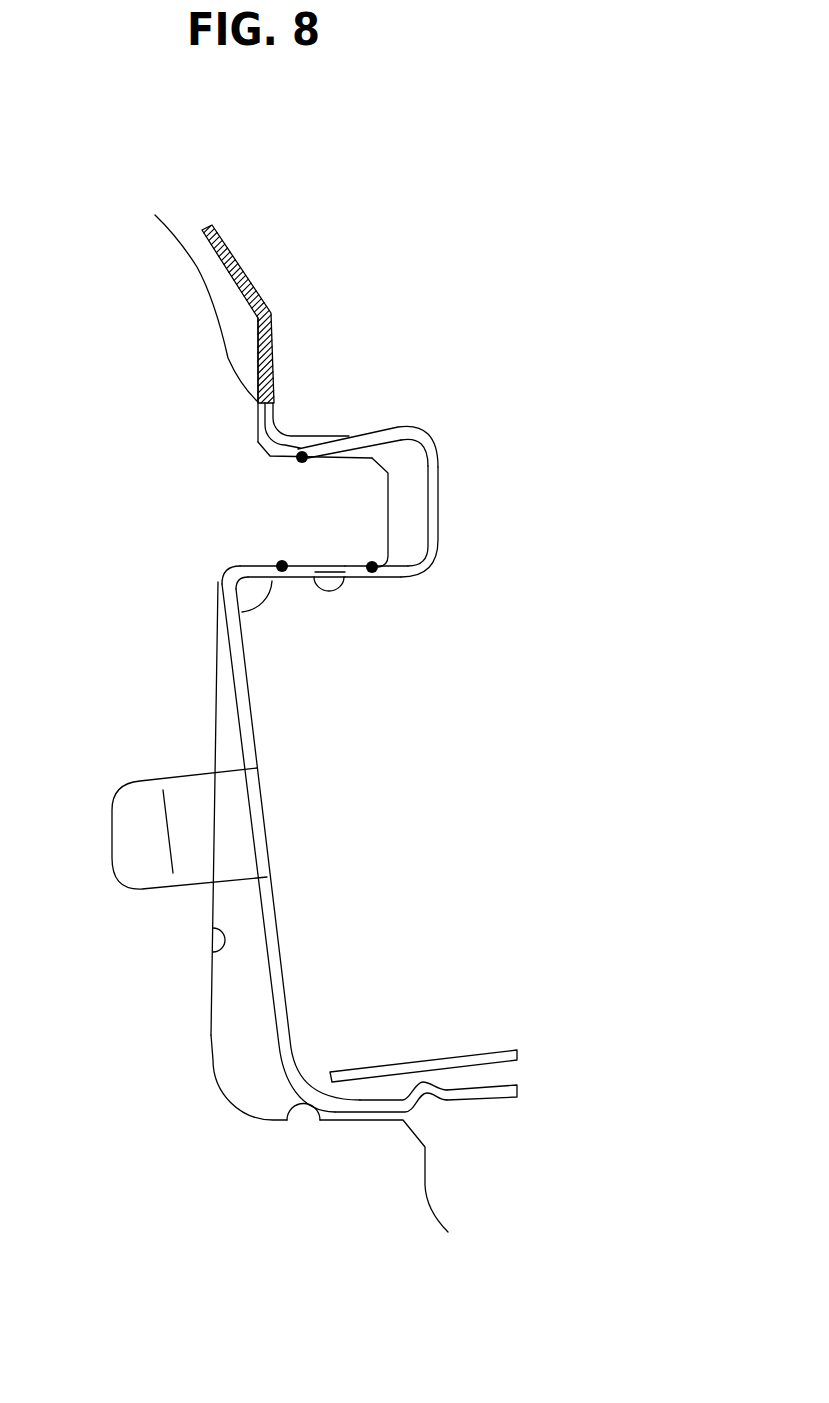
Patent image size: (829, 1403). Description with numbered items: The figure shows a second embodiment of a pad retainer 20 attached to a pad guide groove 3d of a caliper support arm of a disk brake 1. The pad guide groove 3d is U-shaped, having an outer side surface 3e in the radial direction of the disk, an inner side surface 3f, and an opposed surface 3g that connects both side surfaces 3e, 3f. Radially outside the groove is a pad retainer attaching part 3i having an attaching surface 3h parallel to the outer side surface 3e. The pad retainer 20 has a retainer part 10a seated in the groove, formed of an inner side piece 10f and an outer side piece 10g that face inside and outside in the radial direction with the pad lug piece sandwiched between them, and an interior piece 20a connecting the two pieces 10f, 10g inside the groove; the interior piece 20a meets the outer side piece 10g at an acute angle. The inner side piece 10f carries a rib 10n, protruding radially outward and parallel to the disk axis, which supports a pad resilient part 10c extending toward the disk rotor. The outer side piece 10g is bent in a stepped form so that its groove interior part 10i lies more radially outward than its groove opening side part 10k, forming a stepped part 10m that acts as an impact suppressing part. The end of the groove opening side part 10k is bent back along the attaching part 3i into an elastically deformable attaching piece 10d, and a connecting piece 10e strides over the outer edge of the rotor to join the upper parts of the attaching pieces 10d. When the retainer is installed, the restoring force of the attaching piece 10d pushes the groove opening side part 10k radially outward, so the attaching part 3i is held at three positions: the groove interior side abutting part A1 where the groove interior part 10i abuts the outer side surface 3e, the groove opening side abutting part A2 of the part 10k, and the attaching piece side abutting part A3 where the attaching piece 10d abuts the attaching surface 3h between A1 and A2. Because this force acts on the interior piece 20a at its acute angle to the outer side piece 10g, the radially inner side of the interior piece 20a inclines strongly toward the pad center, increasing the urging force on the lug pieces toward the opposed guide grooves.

The vehicle trim structure 1 is at (255, 141).
The connecting piece 10e is at (247, 276).
The pad retainer 20 is at (293, 317).
The attaching surface 3h is at (346, 444).
The pad retainer attaching part 3i is at (377, 487).
The attaching piece 10d is at (372, 434).
The outer side piece 10g is at (415, 597).
The groove opening side part 10k is at (358, 578).
The stepped part 10m is at (303, 578).
The outer side surface 3e is at (335, 564).
The groove interior part 10i is at (255, 572).
The retainer part 10a is at (296, 918).
The interior piece 20a is at (279, 985).
The rib 10n is at (424, 1083).
The inner side piece 10f is at (488, 1097).
The pad resilient part 10c is at (480, 1050).
The pad guide groove 3d is at (238, 710).
The opposed surface 3g is at (212, 949).
The inner side surface 3f is at (288, 1121).
The groove interior side abutting part A1 is at (281, 561).
The groove opening side abutting part A2 is at (371, 561).
The attaching piece side abutting part A3 is at (300, 450).